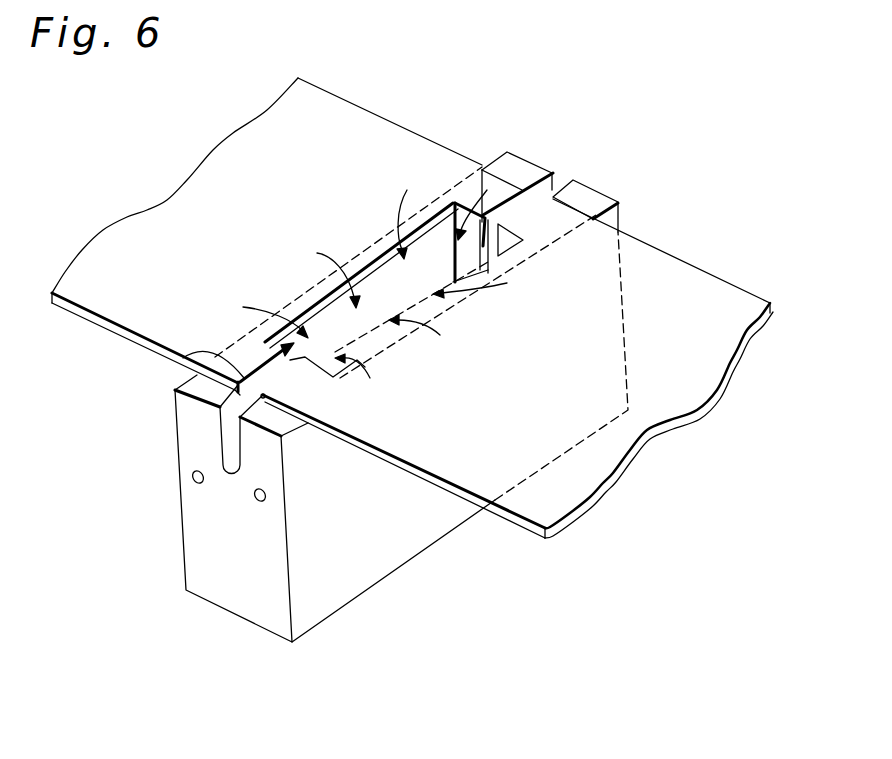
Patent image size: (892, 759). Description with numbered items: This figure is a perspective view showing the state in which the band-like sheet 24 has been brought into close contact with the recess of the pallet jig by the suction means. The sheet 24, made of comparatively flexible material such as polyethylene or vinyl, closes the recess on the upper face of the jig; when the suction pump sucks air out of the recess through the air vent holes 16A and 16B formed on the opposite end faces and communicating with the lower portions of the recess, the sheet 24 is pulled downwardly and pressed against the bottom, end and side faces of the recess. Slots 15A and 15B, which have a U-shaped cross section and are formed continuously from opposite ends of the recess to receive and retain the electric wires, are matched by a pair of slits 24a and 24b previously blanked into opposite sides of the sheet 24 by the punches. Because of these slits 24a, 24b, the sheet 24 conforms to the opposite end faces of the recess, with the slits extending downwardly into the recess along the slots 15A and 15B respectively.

The band-like sheet 24 is at (655, 273).
The slit 24a is at (185, 358).
The slit 24b is at (510, 203).
The slot 15A is at (218, 434).
The slot 15B is at (545, 180).
The air vent hole 16A is at (192, 478).
The air vent hole 16B is at (258, 503).